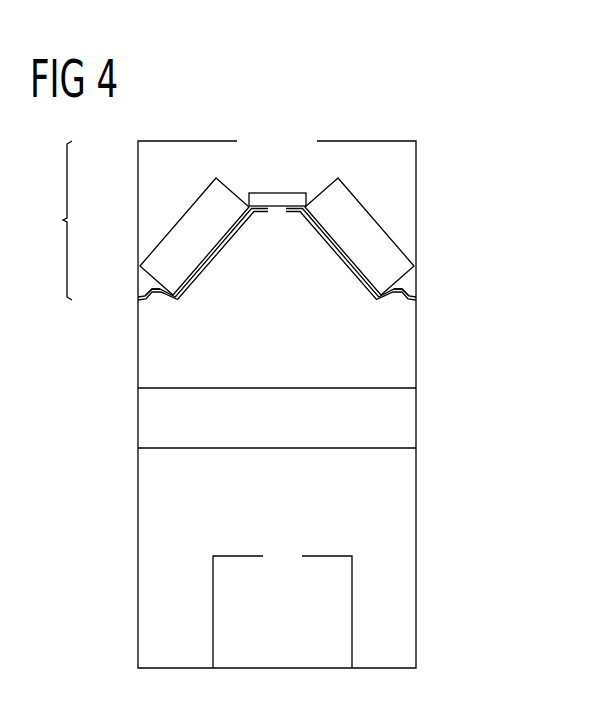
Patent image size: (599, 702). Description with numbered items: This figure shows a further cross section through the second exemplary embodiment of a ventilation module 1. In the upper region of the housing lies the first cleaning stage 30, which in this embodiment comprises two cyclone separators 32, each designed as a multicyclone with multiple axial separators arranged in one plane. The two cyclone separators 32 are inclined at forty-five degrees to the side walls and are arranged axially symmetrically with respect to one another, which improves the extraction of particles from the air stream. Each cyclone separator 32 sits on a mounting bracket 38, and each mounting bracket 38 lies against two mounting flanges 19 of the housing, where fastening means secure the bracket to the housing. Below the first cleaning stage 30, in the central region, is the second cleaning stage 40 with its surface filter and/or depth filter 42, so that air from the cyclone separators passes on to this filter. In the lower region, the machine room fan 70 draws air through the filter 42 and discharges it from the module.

The ventilation module 1 is at (456, 129).
The mounting flanges 19 is at (275, 193).
The first cleaning stage 30 is at (51, 220).
The cyclone separators 32 is at (160, 246).
The mounting bracket 38 is at (155, 300).
The second cleaning stage 40 is at (150, 413).
The surface filter and/or depth filter 42 is at (403, 414).
The machine room fan 70 is at (338, 622).